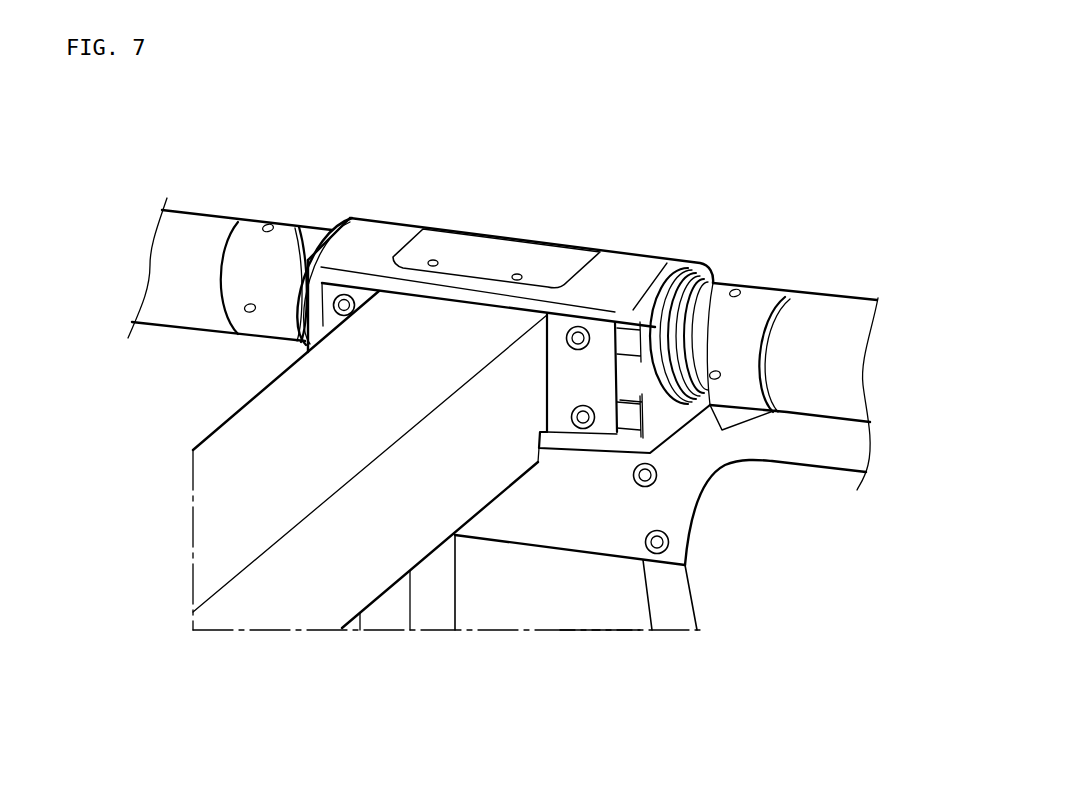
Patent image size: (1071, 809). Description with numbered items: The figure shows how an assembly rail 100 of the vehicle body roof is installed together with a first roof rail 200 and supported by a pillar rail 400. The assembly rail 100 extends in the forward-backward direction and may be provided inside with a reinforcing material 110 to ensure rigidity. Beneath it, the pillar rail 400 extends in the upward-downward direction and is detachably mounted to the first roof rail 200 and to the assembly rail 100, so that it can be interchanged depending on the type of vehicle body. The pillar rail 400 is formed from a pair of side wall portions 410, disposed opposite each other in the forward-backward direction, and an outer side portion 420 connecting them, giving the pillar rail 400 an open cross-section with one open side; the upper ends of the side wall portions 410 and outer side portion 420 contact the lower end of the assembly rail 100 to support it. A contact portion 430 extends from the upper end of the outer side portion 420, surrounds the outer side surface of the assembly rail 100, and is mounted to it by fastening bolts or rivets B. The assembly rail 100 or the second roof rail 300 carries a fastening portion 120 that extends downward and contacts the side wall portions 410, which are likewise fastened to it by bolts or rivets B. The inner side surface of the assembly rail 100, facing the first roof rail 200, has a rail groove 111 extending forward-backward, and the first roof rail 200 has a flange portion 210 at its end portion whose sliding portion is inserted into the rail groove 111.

The assembly rail 100 is at (394, 210).
The reinforcing material 110 is at (603, 350).
The rail groove 111 is at (641, 415).
The fastening portion 120 is at (713, 462).
The first roof rail 200 is at (241, 438).
The flange portion 210 is at (618, 310).
The second roof rail 300 is at (205, 200).
The pillar rail 400 is at (601, 634).
The side wall portions 410 is at (672, 610).
The outer side portion 420 is at (510, 600).
The contact portion 430 is at (502, 247).
The bolts or rivets B is at (341, 293).